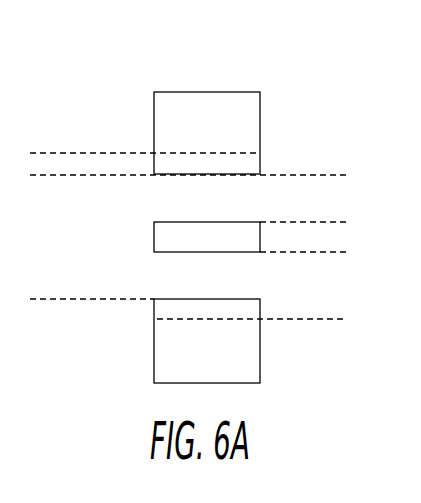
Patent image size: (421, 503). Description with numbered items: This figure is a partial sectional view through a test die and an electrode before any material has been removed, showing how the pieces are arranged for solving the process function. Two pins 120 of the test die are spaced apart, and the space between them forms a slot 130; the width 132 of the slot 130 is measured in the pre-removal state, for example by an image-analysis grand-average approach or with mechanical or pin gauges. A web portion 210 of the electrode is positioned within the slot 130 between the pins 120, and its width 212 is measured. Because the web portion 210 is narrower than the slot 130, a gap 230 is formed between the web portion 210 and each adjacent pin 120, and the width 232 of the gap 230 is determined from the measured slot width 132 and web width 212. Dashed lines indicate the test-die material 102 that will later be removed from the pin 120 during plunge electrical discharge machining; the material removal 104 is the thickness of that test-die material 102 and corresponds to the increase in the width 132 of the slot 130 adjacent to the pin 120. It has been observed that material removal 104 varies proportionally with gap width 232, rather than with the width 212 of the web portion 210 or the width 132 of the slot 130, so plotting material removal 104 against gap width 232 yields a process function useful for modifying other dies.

The pins 120 is at (222, 117).
The test-die material 102 is at (210, 167).
The material removal 104 is at (39, 203).
The width of slot 132 is at (70, 175).
The slot 130 is at (154, 176).
The gap width 232 is at (278, 145).
The width of web portion 212 is at (280, 222).
The gap 230 is at (173, 209).
The web portion 210 is at (180, 237).